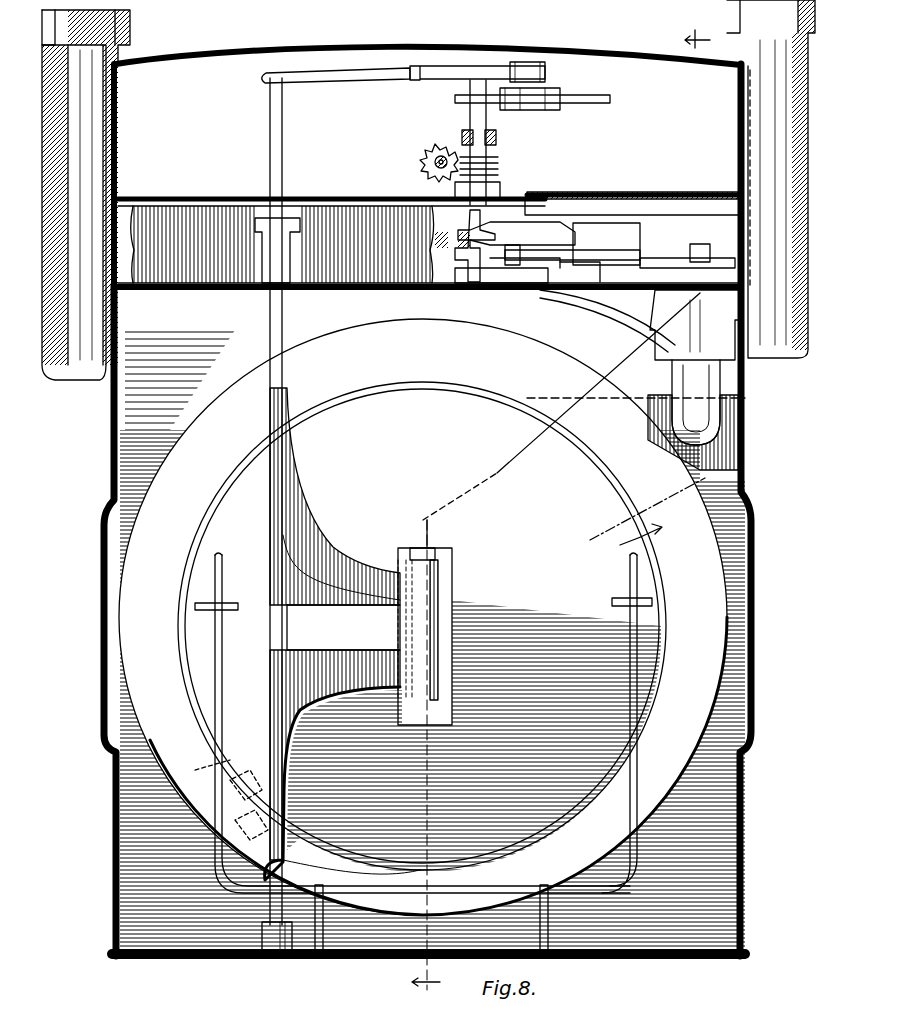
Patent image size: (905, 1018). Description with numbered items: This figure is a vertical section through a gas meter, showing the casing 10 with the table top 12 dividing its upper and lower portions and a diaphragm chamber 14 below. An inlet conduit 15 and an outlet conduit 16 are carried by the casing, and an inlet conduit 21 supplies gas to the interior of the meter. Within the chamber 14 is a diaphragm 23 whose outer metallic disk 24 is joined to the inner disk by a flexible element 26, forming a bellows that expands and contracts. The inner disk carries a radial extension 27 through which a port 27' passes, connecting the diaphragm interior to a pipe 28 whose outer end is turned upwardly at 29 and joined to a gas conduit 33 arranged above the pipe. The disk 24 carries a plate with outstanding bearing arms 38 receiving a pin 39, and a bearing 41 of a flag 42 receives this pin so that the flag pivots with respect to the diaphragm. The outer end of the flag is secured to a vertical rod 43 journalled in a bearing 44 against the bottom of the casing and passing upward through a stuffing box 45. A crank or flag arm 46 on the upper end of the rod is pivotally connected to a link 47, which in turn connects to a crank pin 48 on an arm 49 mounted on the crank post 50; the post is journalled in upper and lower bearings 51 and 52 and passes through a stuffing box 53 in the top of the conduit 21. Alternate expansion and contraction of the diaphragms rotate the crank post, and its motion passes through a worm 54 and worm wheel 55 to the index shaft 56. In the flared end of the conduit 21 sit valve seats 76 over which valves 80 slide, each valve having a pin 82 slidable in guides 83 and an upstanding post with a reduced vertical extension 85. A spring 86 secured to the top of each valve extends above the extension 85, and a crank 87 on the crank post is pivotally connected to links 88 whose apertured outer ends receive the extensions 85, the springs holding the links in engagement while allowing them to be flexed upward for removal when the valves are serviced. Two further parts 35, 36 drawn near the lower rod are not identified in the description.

The casing 10 is at (715, 32).
The table top 12 is at (352, 288).
The diaphragm chambers 14 is at (160, 390).
The inlet conduit 15 is at (50, 345).
The outlet conduit 16 is at (757, 162).
The inlet conduit 21 is at (222, 215).
The diaphragm 23 is at (626, 539).
The outer metallic disk 24 is at (444, 402).
The flexible element 26 is at (423, 617).
The radial extension 27 is at (584, 406).
The port 27' is at (631, 508).
The pipe 28 is at (672, 432).
The upturned pipe end 29 is at (695, 367).
The gas conduit 33 is at (640, 300).
The tie rod 35 is at (225, 786).
The rod clip 36 is at (195, 770).
The bearing arms 38 is at (435, 556).
The pin 39 is at (400, 690).
The bearing 41 is at (438, 610).
The flags 42 is at (335, 732).
The vertical rod 43 is at (283, 364).
The bearings 44 is at (258, 955).
The stuffing boxes 45 is at (277, 250).
The flag arm 46 is at (335, 82).
The link 47 is at (452, 74).
The crank pin 48 is at (527, 62).
The arm 49 is at (578, 100).
The crank post 50 is at (470, 116).
The bearing 51 is at (498, 138).
The bearing 52 is at (462, 284).
The stuffing box 53 is at (500, 188).
The worm 54 is at (500, 168).
The worm wheel 55 is at (428, 152).
The index shaft 56 is at (428, 172).
The valve seats 76 is at (556, 286).
The valve 80 is at (640, 238).
The pin 82 is at (712, 255).
The guides 83 is at (707, 245).
The reduced vertical extension 85 is at (510, 286).
The spring 86 is at (618, 215).
The crank 87 is at (455, 262).
The links 88 is at (436, 244).